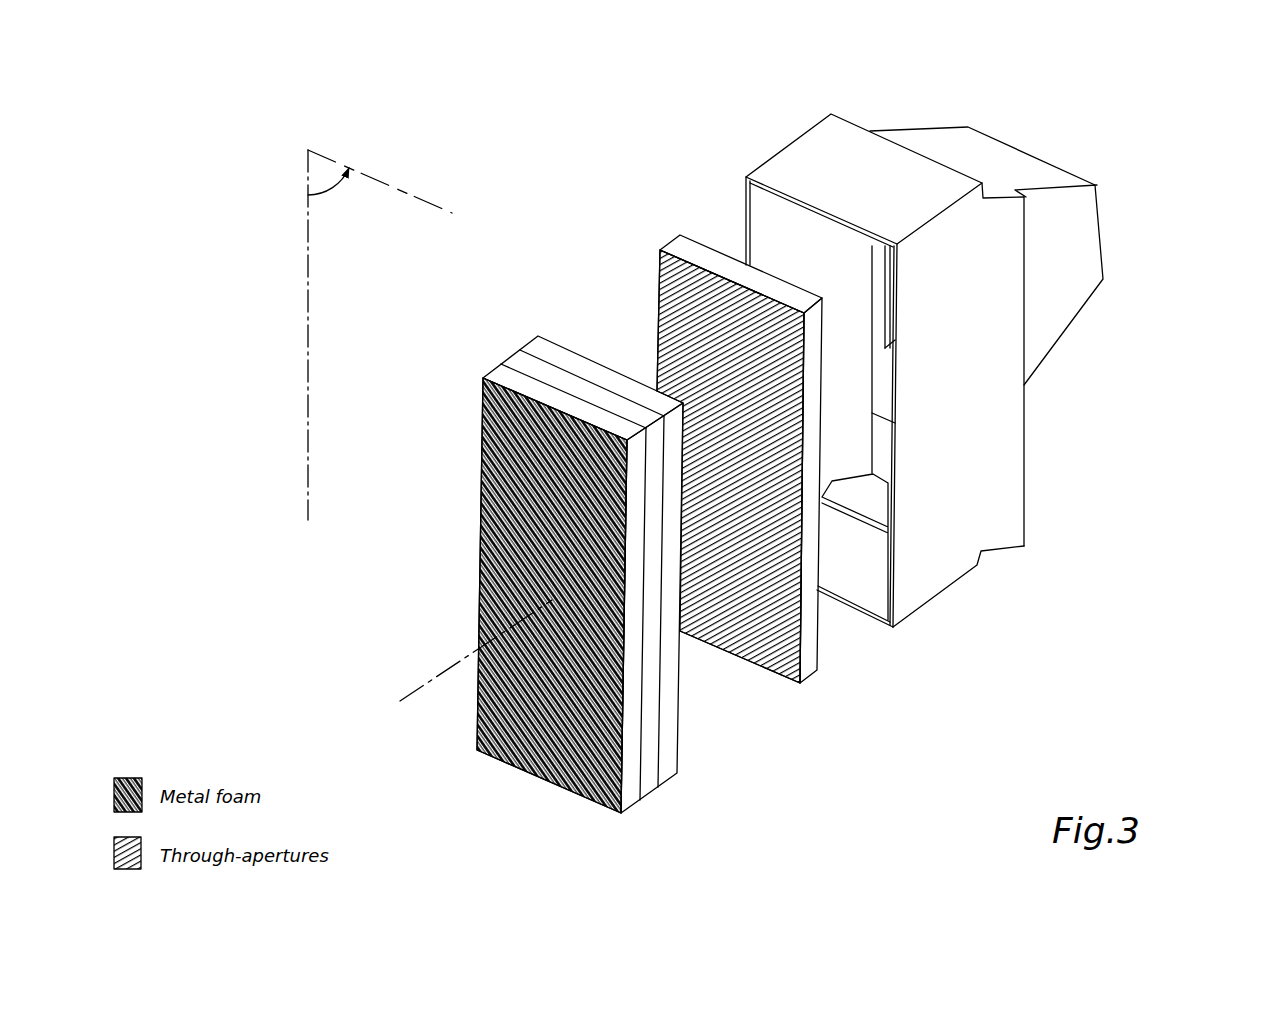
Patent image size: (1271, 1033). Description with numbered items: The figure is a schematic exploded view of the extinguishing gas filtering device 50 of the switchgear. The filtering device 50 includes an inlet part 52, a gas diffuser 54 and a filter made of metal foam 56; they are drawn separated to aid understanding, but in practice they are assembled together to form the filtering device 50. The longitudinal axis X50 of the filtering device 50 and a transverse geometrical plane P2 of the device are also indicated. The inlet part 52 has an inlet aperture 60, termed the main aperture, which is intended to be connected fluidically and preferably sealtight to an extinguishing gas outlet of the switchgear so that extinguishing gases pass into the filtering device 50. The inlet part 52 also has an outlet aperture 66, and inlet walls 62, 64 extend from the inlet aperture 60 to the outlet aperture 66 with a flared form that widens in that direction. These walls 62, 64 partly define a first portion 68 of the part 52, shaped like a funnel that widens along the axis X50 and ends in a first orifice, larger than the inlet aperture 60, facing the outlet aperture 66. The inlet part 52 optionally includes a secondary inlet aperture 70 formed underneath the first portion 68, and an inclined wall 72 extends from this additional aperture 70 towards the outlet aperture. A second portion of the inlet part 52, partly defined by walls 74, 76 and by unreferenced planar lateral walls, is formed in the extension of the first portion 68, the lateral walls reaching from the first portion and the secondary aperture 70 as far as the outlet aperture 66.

The filtering device 50 is at (960, 403).
The inlet part 52 is at (845, 403).
The gas diffuser 54 is at (770, 620).
The filter made of metal foam 56 is at (528, 768).
The inlet aperture 60 is at (1065, 372).
The inlet wall 62 is at (1007, 170).
The inlet wall 64 is at (1064, 346).
The outlet aperture 66 is at (770, 210).
The first portion 68 is at (1072, 258).
The secondary inlet aperture 70 is at (877, 447).
The inclined wall 72 is at (1003, 555).
The wall 74 is at (841, 157).
The wall 76 is at (870, 580).
The longitudinal axis X50 is at (456, 663).
The transverse geometrical plane P2 is at (380, 335).